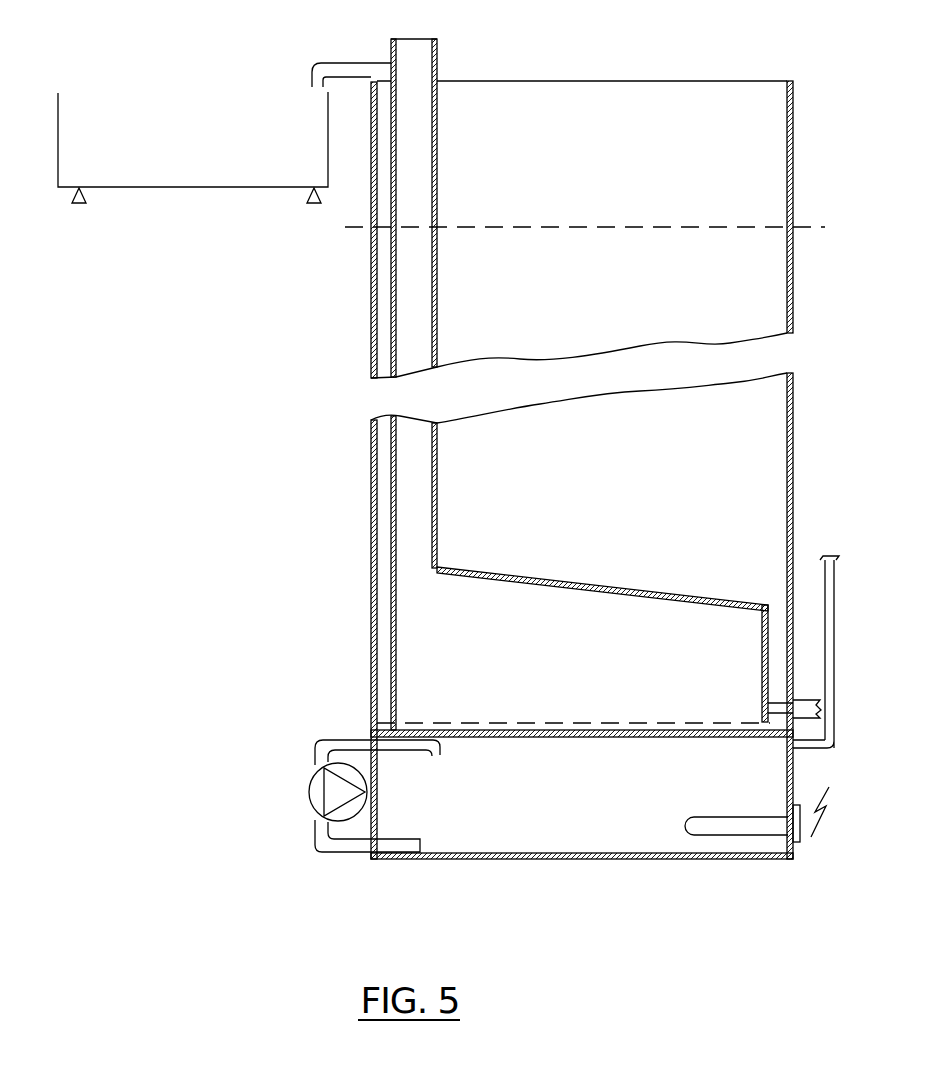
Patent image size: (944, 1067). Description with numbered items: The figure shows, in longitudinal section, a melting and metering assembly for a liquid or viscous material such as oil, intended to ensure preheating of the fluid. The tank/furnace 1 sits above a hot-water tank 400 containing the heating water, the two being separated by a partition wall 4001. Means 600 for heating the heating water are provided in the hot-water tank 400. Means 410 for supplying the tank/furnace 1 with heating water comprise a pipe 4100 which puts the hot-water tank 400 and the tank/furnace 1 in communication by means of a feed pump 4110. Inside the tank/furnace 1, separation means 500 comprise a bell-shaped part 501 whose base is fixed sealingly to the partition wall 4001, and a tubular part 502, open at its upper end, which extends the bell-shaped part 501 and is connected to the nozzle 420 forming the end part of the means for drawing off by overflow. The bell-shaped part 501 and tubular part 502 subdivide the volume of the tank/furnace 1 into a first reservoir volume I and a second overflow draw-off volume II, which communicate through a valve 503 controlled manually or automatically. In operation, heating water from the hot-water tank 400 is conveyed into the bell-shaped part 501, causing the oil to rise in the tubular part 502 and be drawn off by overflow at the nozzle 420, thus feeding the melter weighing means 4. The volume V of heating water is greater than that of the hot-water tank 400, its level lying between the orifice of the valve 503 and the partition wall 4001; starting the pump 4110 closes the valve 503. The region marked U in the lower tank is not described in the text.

The tank/furnace 1 is at (753, 192).
The melter weighing means 4 is at (222, 175).
The nozzle 420 is at (353, 66).
The tubular part 502 is at (395, 290).
The bell-shaped part 501 is at (395, 640).
The separation means 500 is at (386, 567).
The valve 503 is at (763, 712).
The volume of heating water V is at (377, 723).
The first reservoir volume I is at (467, 460).
The second overflow draw-off volume II is at (425, 597).
The partition wall 4001 is at (565, 737).
The hot-water tank 400 is at (488, 840).
The lower tank interior U is at (442, 813).
The means for supplying heating water 410 is at (331, 822).
The pipe 4100 is at (330, 845).
The feed pump 4110 is at (330, 802).
The means for heating the heating water 600 is at (725, 827).